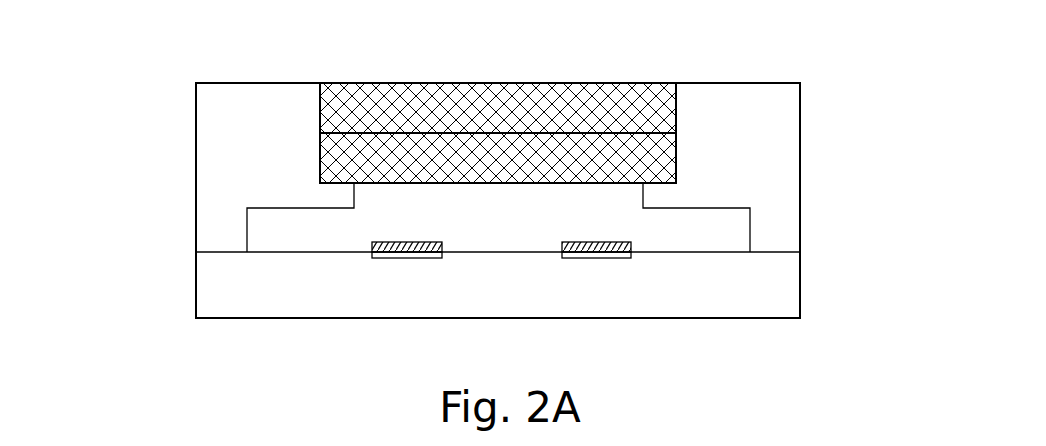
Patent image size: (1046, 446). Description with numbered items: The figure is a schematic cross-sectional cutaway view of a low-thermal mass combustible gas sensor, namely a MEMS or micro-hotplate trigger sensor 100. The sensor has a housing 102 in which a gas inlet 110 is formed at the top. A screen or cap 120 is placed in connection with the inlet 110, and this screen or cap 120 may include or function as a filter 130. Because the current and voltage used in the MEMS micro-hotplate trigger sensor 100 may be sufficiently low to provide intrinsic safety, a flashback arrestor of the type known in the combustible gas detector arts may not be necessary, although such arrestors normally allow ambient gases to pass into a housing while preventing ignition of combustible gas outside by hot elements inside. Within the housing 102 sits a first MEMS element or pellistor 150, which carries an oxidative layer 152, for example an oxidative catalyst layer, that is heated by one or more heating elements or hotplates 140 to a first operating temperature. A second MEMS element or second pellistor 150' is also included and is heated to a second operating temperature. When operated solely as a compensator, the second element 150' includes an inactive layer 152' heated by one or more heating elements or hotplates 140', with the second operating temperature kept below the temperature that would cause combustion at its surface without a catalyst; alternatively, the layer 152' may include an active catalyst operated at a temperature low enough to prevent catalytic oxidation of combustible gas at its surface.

The MEMS micro-hotplate trigger sensor 100 is at (165, 64).
The housing 102 is at (800, 178).
The gas inlet 110 is at (676, 83).
The screen or cap 120 is at (478, 83).
The filter 130 is at (617, 150).
The heating element or hotplate 140 is at (257, 275).
The heating element or hotplate 140' is at (734, 294).
The first MEMS element or pellistor 150 is at (220, 175).
The second MEMS element or second pellistor 150' is at (772, 217).
The oxidative layer 152 is at (265, 218).
The inactive layer 152' is at (721, 158).